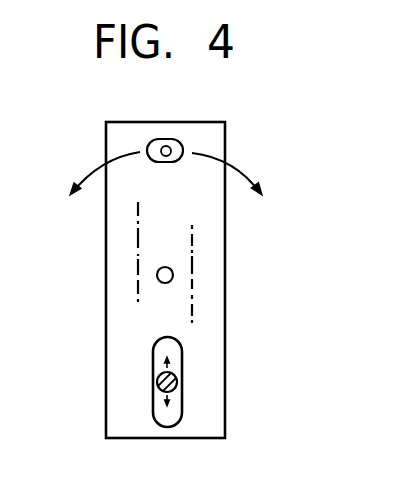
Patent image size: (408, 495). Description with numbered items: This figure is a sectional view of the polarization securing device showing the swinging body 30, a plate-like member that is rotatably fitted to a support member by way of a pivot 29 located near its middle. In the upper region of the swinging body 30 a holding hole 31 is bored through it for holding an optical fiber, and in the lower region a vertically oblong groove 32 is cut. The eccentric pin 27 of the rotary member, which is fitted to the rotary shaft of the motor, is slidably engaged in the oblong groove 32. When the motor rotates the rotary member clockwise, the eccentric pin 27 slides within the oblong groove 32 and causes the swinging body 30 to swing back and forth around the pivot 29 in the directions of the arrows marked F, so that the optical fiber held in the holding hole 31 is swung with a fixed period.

The eccentric pin 27 is at (153, 382).
The pivot 29 is at (165, 267).
The swinging body 30 is at (112, 295).
The holding hole 31 is at (150, 143).
The oblong groove 32 is at (173, 346).
The pivot force direction F is at (165, 140).